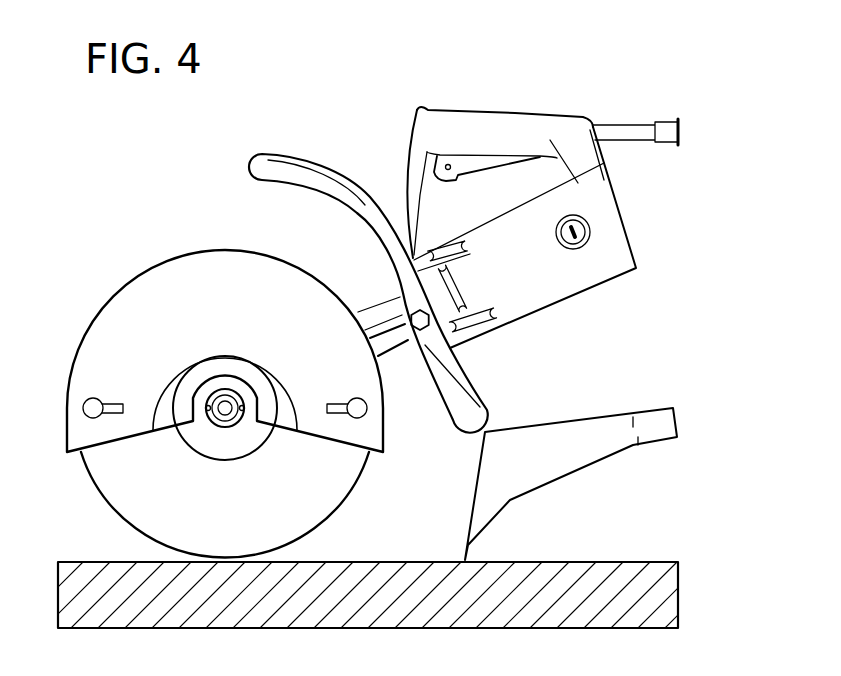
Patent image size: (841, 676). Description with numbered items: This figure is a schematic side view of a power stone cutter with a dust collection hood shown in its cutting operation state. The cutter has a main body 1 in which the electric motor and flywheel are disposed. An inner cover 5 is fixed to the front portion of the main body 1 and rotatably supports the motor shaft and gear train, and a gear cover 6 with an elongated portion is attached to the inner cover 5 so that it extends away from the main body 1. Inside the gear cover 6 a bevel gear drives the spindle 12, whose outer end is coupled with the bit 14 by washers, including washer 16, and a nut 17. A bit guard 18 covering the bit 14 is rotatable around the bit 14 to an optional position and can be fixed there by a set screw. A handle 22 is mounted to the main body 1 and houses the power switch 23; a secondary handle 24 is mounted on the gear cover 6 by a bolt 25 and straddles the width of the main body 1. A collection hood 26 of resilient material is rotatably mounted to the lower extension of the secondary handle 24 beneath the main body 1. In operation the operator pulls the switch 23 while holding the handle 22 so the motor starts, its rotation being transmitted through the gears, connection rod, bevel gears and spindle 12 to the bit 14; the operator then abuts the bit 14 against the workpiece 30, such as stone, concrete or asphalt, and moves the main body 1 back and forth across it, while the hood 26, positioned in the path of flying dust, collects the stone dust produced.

The main body 1 is at (570, 288).
The inner cover 5 is at (470, 343).
The gear cover 6 is at (372, 312).
The spindle 12 is at (214, 412).
The bit 14 is at (363, 470).
The washer 16 is at (201, 457).
The nut 17 is at (237, 388).
The bit guard 18 is at (123, 295).
The handle 22 is at (543, 114).
The power switch 23 is at (470, 163).
The secondary handle 24 is at (312, 163).
The bolt 25 is at (420, 334).
The collection hood 26 is at (607, 462).
The workpiece 30 is at (653, 560).